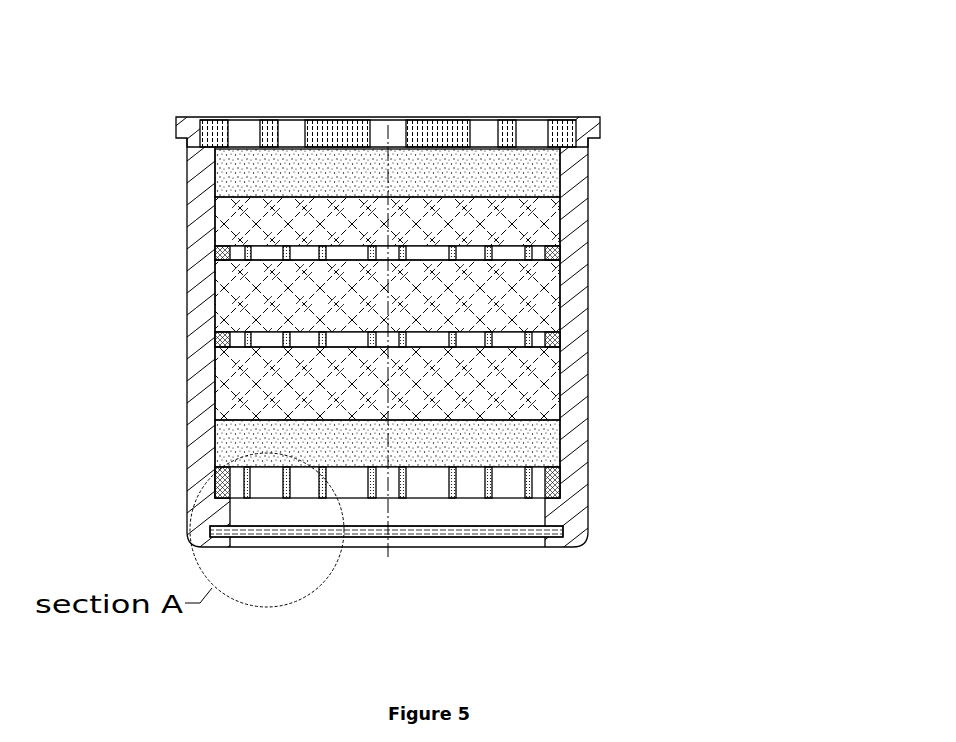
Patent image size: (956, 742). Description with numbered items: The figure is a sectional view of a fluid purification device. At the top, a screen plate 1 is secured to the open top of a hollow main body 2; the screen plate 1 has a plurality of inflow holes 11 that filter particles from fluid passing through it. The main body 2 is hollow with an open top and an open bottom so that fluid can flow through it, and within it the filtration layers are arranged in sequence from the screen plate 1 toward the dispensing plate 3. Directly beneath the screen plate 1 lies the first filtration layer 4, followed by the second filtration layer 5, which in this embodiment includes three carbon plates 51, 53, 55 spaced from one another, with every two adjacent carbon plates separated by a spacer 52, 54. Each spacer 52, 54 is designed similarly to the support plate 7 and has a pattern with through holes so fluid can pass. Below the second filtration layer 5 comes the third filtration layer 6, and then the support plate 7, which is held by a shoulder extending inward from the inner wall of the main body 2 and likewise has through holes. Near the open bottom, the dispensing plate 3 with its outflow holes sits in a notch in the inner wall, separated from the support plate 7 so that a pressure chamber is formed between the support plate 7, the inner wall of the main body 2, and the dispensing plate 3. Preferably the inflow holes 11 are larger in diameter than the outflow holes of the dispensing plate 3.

The screen plate 1 is at (435, 82).
The inflow holes 11 is at (400, 125).
The main body 2 is at (195, 420).
The dispensing plate 3 is at (560, 533).
The first filtration layer 4 is at (545, 172).
The second filtration layer 5 is at (528, 279).
The carbon plate 51 is at (543, 222).
The spacer 52 is at (560, 250).
The carbon plate 53 is at (553, 307).
The spacer 54 is at (558, 341).
The carbon plate 55 is at (474, 383).
The third filtration layer 6 is at (535, 447).
The support plate 7 is at (548, 490).